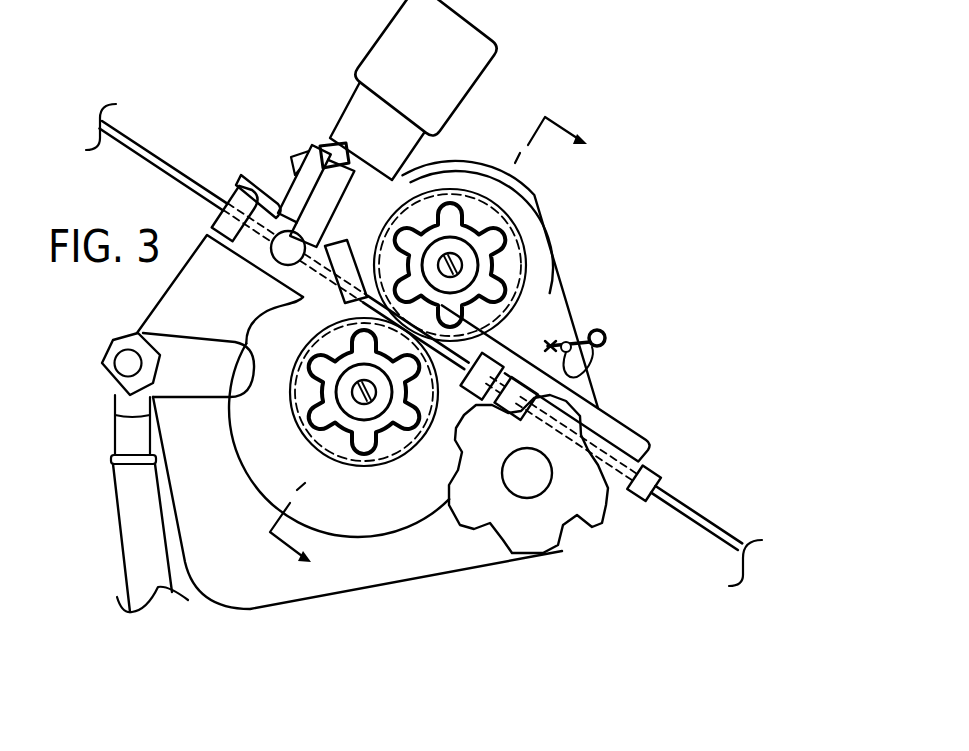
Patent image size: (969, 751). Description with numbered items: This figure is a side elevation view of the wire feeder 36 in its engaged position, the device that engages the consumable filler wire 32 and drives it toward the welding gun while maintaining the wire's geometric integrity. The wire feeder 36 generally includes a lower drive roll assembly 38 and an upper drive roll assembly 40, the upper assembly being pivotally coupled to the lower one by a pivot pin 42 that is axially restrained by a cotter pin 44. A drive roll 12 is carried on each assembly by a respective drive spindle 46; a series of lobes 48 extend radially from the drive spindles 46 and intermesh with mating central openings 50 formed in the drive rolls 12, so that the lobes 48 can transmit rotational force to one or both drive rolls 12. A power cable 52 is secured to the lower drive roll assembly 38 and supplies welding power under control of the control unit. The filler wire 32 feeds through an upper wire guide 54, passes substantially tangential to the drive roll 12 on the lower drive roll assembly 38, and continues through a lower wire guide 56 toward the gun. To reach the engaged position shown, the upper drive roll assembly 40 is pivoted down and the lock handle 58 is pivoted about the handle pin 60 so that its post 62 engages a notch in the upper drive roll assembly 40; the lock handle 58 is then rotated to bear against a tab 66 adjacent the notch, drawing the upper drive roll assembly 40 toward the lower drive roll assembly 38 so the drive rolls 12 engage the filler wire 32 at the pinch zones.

The drive rolls 12 is at (529, 266).
The filler wire 32 is at (707, 527).
The wire feeder 36 is at (678, 251).
The lower drive roll assembly 38 is at (318, 597).
The upper drive roll assembly 40 is at (477, 158).
The pivot pin 42 is at (578, 374).
The cotter pin 44 is at (606, 338).
The drive spindles 46 is at (473, 227).
The lobes 48 is at (461, 320).
The central openings 50 is at (403, 270).
The power cable 52 is at (113, 527).
The upper wire guide 54 is at (213, 222).
The lower wire guide 56 is at (668, 466).
The lock handle 58 is at (489, 33).
The handle pin 60 is at (298, 153).
The post 62 is at (327, 147).
The tab 66 is at (327, 133).